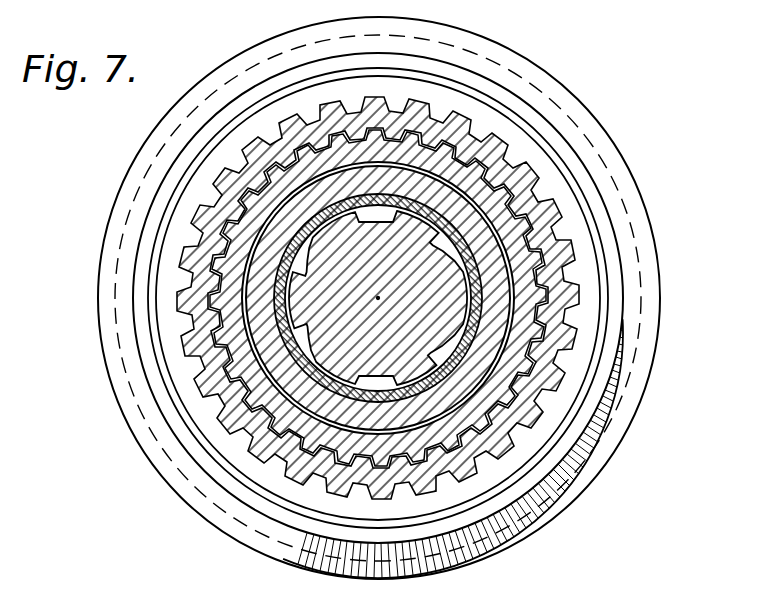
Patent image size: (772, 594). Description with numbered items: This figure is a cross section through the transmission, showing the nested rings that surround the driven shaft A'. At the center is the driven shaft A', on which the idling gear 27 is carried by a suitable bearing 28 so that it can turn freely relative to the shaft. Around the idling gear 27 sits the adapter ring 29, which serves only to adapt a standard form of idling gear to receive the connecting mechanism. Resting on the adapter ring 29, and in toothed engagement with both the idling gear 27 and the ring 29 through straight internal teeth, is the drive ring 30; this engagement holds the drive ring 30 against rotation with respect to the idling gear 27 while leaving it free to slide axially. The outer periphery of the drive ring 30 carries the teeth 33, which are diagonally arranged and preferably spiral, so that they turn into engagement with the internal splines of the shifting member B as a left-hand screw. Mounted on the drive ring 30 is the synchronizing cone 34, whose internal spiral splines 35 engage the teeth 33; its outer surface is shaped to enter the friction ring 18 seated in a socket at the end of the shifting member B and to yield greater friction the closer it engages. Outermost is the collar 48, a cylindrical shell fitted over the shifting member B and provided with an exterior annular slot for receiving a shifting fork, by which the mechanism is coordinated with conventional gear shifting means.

The collar 48 is at (583, 135).
The shifting member B is at (583, 183).
The friction ring 18 is at (583, 200).
The synchronizing cone 34 is at (560, 240).
The spiral splines 35 is at (567, 282).
The teeth 33 is at (572, 348).
The drive ring 30 is at (540, 368).
The adapter ring 29 is at (520, 383).
The idling gear 27 is at (273, 238).
The bearing 28 is at (290, 298).
The driven shaft A' is at (472, 338).